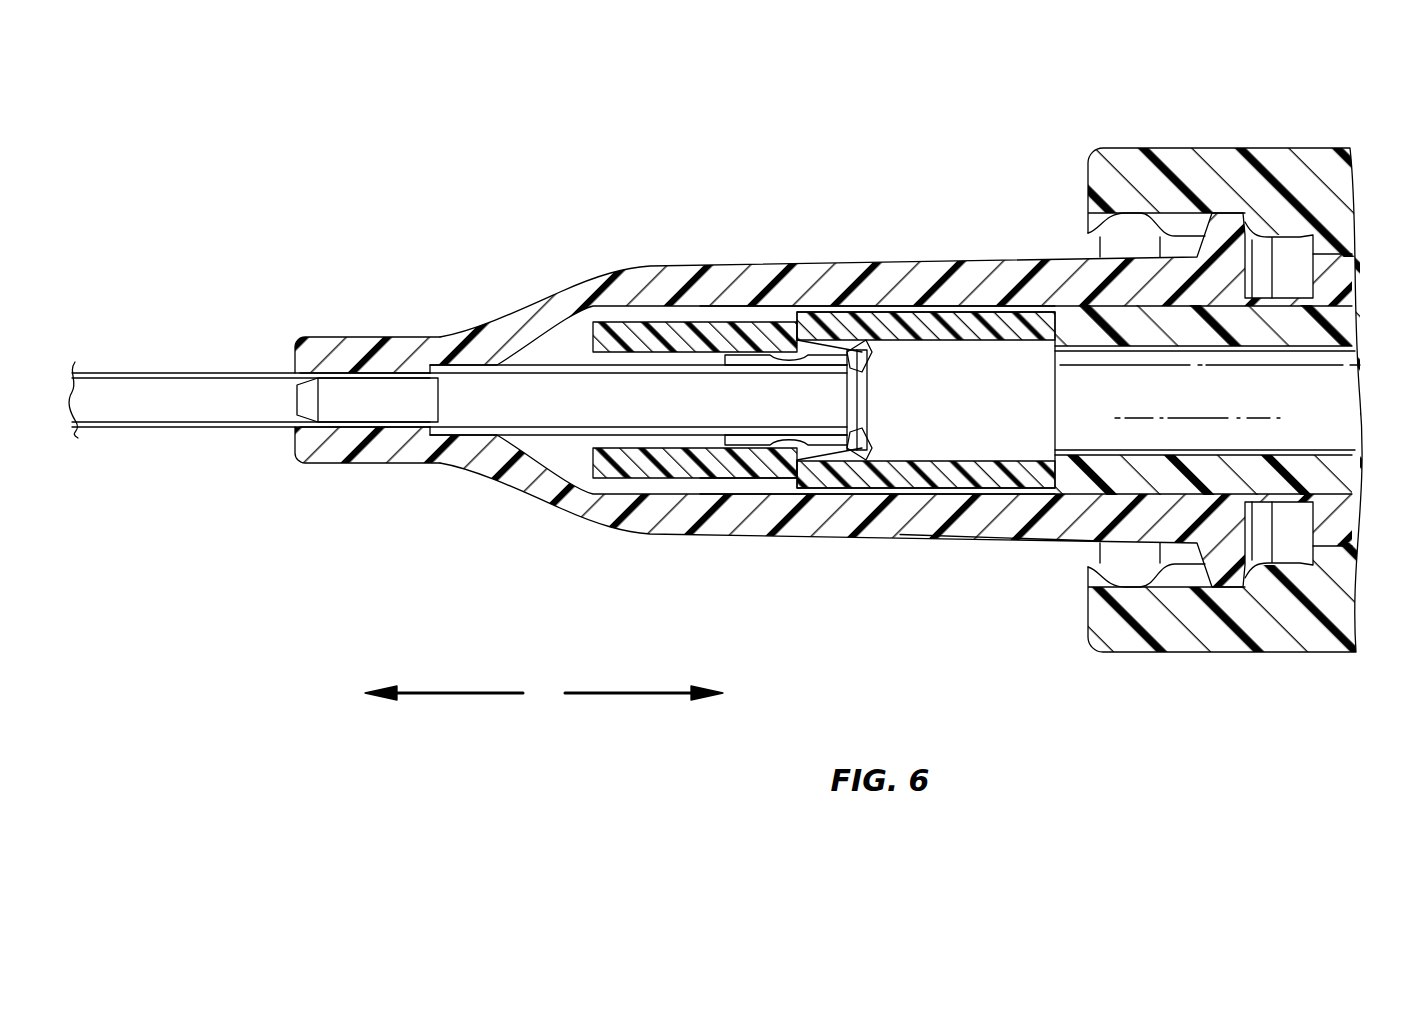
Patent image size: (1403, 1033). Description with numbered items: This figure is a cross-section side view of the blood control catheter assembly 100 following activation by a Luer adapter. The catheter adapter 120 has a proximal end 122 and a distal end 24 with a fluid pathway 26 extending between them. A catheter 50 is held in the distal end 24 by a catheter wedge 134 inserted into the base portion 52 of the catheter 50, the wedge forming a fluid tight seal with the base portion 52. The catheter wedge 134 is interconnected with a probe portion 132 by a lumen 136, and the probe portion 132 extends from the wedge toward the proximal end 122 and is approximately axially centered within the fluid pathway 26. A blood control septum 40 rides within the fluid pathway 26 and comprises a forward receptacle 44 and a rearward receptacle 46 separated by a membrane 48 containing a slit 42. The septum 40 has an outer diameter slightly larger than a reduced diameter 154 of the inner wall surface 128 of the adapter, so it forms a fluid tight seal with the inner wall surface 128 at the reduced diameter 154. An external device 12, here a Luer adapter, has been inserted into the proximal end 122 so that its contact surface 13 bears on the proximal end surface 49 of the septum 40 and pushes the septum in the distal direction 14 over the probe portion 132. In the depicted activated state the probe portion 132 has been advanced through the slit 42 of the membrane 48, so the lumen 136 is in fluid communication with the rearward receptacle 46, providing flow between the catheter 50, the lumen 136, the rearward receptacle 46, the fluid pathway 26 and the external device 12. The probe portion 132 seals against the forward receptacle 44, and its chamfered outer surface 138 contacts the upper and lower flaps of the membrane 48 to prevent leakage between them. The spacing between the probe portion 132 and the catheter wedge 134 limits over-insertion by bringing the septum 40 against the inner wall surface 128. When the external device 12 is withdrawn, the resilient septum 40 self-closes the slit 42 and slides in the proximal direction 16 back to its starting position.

The blood control catheter assembly 100 is at (290, 192).
The external device 12 is at (1263, 148).
The contact surface 13 is at (1053, 305).
The distal direction 14 is at (453, 693).
The proximal direction 16 is at (643, 693).
The distal end 24 is at (293, 437).
The fluid pathway 26 is at (1000, 543).
The blood control septum 40 is at (750, 470).
The slit 42 is at (885, 440).
The forward receptacle 44 is at (623, 445).
The rearward receptacle 46 is at (968, 362).
The membrane 48 is at (890, 305).
The proximal end surface 49 is at (1075, 480).
The catheter 50 is at (168, 372).
The base portion 52 is at (440, 378).
The catheter adapter 120 is at (757, 265).
The proximal end 122 is at (1235, 547).
The inner wall surface 128 is at (548, 345).
The probe portion 132 is at (869, 390).
The catheter wedge 134 is at (340, 430).
The lumen 136 is at (518, 405).
The chamfered outer surface 138 is at (828, 455).
The reduced diameter 154 is at (903, 308).